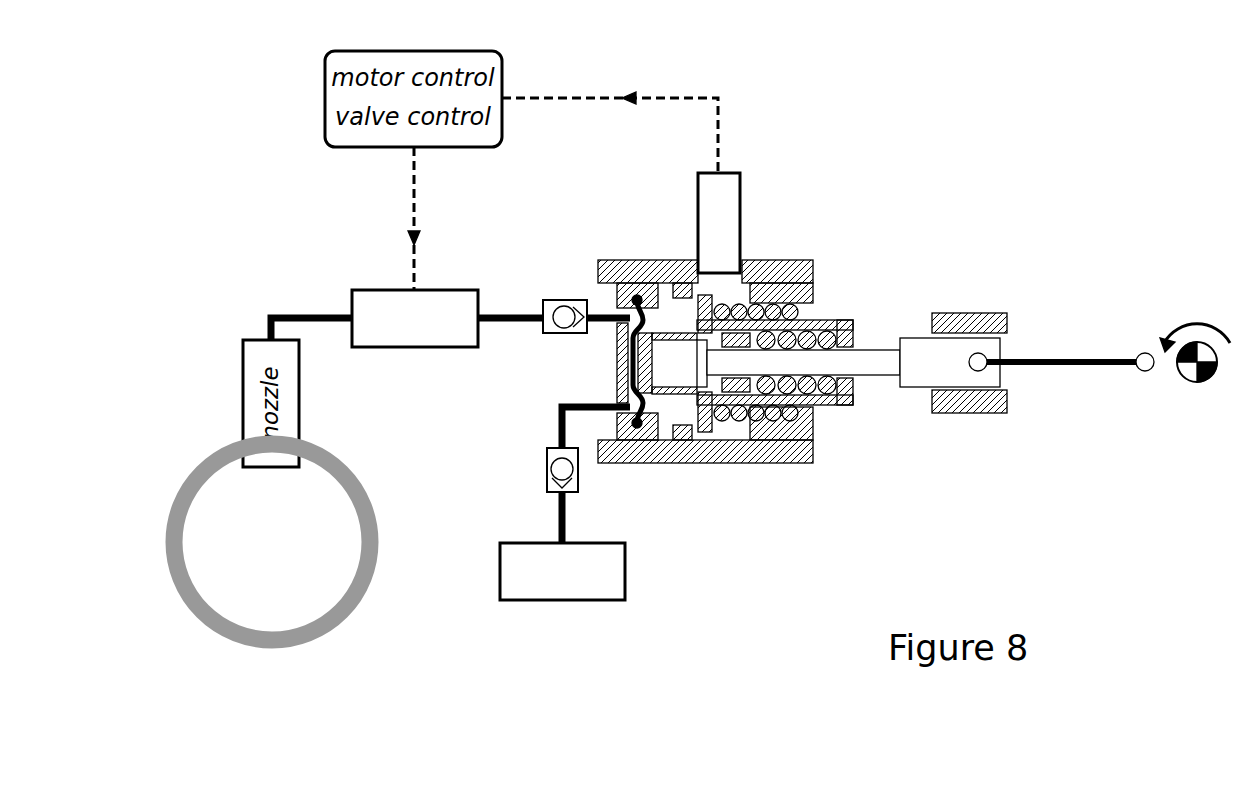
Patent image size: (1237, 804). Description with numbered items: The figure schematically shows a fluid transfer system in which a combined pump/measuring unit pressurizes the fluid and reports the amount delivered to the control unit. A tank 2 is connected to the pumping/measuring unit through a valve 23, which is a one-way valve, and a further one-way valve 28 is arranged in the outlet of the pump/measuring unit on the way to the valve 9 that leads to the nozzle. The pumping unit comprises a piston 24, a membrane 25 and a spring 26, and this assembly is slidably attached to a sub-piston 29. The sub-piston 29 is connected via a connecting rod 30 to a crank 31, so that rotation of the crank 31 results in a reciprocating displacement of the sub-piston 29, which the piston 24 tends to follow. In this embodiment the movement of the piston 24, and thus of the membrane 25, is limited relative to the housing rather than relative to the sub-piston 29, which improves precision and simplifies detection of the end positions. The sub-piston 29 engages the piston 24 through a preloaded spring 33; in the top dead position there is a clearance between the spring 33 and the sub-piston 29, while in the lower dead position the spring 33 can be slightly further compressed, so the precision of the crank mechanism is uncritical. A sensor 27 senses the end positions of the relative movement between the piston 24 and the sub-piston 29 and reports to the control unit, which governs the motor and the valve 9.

The tank 2 is at (624, 553).
The valve 9 is at (367, 302).
The valve 23 is at (552, 483).
The piston 24 is at (710, 430).
The membrane 25 is at (632, 376).
The spring 26 is at (757, 418).
The sensor 27 is at (737, 212).
The one-way valve 28 is at (573, 303).
The sub-piston 29 is at (872, 365).
The connecting rod 30 is at (1033, 366).
The crank 31 is at (1165, 370).
The preloaded spring 33 is at (810, 330).